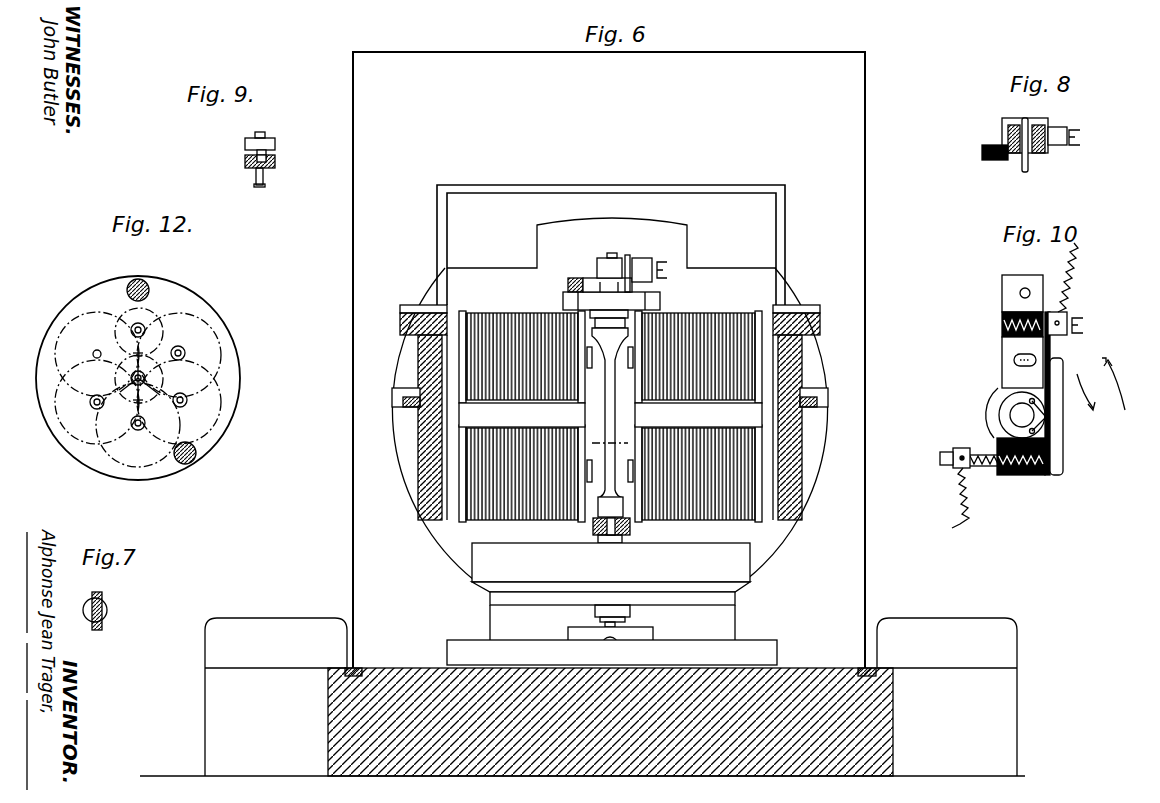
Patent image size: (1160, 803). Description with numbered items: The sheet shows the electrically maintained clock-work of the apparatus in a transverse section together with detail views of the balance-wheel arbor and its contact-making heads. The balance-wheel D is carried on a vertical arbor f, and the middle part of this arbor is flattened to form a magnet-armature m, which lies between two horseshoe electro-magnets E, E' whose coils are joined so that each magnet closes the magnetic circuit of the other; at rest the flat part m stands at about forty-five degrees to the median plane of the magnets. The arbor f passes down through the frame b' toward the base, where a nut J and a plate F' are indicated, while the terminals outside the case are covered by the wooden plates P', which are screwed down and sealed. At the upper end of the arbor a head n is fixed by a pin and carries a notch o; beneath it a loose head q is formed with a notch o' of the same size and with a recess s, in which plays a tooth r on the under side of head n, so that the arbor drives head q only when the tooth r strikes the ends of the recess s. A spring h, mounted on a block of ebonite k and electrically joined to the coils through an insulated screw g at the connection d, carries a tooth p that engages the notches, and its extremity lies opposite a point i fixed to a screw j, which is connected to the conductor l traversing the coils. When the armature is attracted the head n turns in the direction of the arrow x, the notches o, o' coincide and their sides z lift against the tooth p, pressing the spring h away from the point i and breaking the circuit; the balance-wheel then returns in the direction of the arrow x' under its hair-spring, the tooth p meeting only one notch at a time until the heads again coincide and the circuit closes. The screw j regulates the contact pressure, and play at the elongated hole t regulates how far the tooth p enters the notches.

In FIG. 6, the box b' is at (611, 237).
In FIG. 6, the horseshoe electro-magnet E is at (525, 415).
In FIG. 6, the horseshoe electro-magnet E' is at (695, 414).
In FIG. 6, the head n is at (600, 260).
In FIG. 9, the head n is at (276, 140).
In FIG. 8, the head n is at (1005, 130).
In FIG. 10, the head n is at (1022, 415).
In FIG. 6, the spring h is at (640, 258).
In FIG. 8, the spring h is at (1050, 118).
In FIG. 10, the spring h is at (1063, 428).
In FIG. 6, the screw g is at (668, 274).
In FIG. 10, the screw g is at (1065, 332).
In FIG. 6, the loose head q is at (607, 285).
In FIG. 9, the loose head q is at (275, 167).
In FIG. 8, the loose head q is at (1017, 155).
In FIG. 6, the flattened portion of the arbor m is at (610, 408).
In FIG. 7, the flattened portion of the arbor m is at (97, 631).
In FIG. 6, the arbor of the balance-wheel f is at (610, 507).
In FIG. 7, the arbor of the balance-wheel f is at (107, 610).
In FIG. 6, the nut J is at (592, 530).
In FIG. 6, the balance-wheel D is at (611, 562).
In FIG. 6, the plate F' is at (623, 616).
In FIG. 6, the wooden plates P' is at (611, 697).
In FIG. 9, the tooth r is at (268, 152).
In FIG. 8, the tooth r is at (1010, 158).
In FIG. 9, the recess s is at (253, 170).
In FIG. 8, the notch o' is at (1036, 156).
In FIG. 8, the tooth p is at (1045, 152).
In FIG. 10, the tooth p is at (1046, 417).
In FIG. 10, the connection point on conductor d is at (1075, 277).
In FIG. 10, the elongated hole t is at (1012, 360).
In FIG. 10, the block of ebonite k is at (1024, 484).
In FIG. 10, the sides of the notches z is at (1036, 394).
In FIG. 10, the notch o is at (1038, 435).
In FIG. 10, the point i is at (1060, 455).
In FIG. 10, the screw j is at (968, 470).
In FIG. 10, the conductor l is at (953, 501).
In FIG. 10, the arrow x is at (1087, 392).
In FIG. 10, the arrow x' is at (1118, 384).